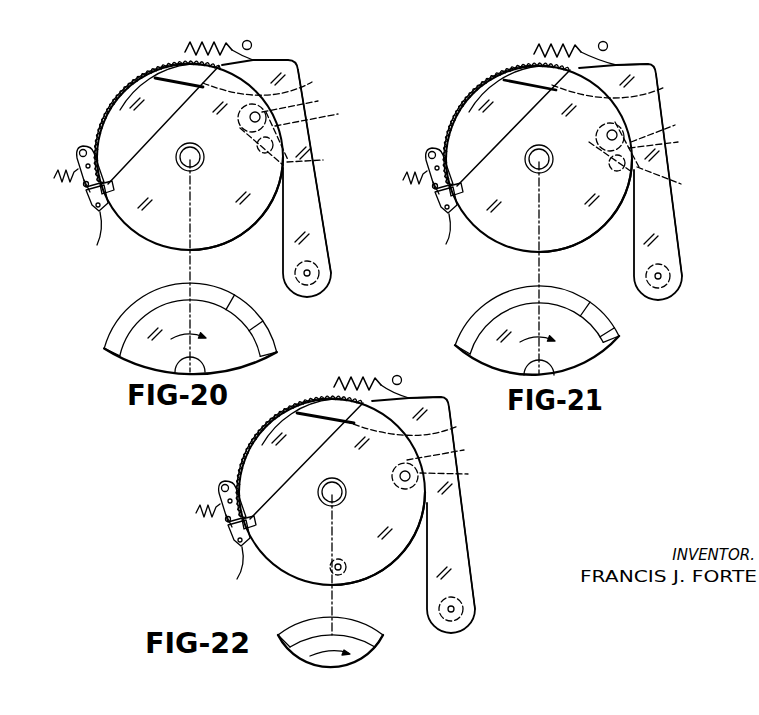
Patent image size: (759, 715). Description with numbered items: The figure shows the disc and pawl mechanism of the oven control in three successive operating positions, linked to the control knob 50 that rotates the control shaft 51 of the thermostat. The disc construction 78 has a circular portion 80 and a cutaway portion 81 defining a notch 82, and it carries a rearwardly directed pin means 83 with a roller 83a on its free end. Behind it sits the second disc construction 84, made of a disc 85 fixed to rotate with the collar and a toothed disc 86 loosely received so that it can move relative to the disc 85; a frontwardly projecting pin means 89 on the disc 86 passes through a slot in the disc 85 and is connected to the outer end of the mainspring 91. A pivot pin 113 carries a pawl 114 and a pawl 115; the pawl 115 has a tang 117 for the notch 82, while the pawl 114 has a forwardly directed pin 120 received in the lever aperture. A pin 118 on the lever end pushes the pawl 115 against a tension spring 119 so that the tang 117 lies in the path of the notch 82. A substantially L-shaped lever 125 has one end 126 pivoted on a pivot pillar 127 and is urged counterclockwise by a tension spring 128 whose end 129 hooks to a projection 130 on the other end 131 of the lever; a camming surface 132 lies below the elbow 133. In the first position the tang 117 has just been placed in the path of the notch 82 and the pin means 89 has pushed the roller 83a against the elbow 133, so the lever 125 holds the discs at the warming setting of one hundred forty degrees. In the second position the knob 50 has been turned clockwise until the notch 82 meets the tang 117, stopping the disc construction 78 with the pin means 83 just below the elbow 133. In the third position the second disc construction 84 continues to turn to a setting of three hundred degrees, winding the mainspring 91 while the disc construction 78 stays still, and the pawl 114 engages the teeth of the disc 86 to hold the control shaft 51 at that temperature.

In FIG. 20, the control knob 50 is at (272, 346).
In FIG. 21, the control knob 50 is at (556, 330).
In FIG. 22, the control knob 50 is at (325, 633).
In FIG. 20, the control shaft 51 is at (192, 272).
In FIG. 21, the control shaft 51 is at (563, 268).
In FIG. 22, the control shaft 51 is at (353, 565).
In FIG. 20, the disc construction 78 is at (232, 236).
In FIG. 21, the disc construction 78 is at (585, 210).
In FIG. 22, the disc construction 78 is at (378, 540).
In FIG. 20, the circular portion 80 is at (151, 238).
In FIG. 21, the circular portion 80 is at (539, 162).
In FIG. 22, the circular portion 80 is at (332, 492).
In FIG. 20, the cutaway portion 81 is at (198, 86).
In FIG. 21, the cutaway portion 81 is at (523, 66).
In FIG. 22, the cutaway portion 81 is at (326, 396).
In FIG. 20, the notch 82 is at (113, 189).
In FIG. 21, the notch 82 is at (469, 186).
In FIG. 22, the notch 82 is at (257, 521).
In FIG. 20, the pin means 83 is at (250, 117).
In FIG. 21, the pin means 83 is at (605, 125).
In FIG. 22, the pin means 83 is at (405, 490).
In FIG. 20, the roller 83a is at (302, 123).
In FIG. 21, the roller 83a is at (658, 142).
In FIG. 22, the roller 83a is at (452, 450).
In FIG. 20, the second disc construction 84 is at (120, 72).
In FIG. 21, the second disc construction 84 is at (485, 83).
In FIG. 22, the second disc construction 84 is at (265, 422).
In FIG. 20, the disc 85 is at (110, 125).
In FIG. 21, the disc 85 is at (492, 124).
In FIG. 22, the disc 85 is at (299, 453).
In FIG. 20, the disc 86 is at (113, 100).
In FIG. 21, the disc 86 is at (498, 123).
In FIG. 22, the disc 86 is at (299, 443).
In FIG. 20, the pin means 89 is at (317, 161).
In FIG. 21, the pin means 89 is at (670, 181).
In FIG. 22, the pin means 89 is at (357, 580).
In FIG. 20, the mainspring 91 is at (204, 157).
In FIG. 21, the mainspring 91 is at (559, 165).
In FIG. 22, the mainspring 91 is at (349, 519).
In FIG. 20, the pivot pin 113 is at (78, 147).
In FIG. 21, the pivot pin 113 is at (415, 164).
In FIG. 22, the pivot pin 113 is at (207, 492).
In FIG. 20, the pawl 114 is at (86, 191).
In FIG. 21, the pawl 114 is at (431, 213).
In FIG. 22, the pawl 114 is at (224, 545).
In FIG. 20, the pawl 115 is at (76, 158).
In FIG. 21, the pawl 115 is at (407, 165).
In FIG. 22, the pawl 115 is at (198, 495).
In FIG. 20, the tang 117 is at (106, 186).
In FIG. 21, the tang 117 is at (511, 129).
In FIG. 22, the tang 117 is at (304, 462).
In FIG. 20, the pin 118 is at (84, 185).
In FIG. 21, the pin 118 is at (413, 200).
In FIG. 22, the pin 118 is at (207, 533).
In FIG. 20, the tension spring 119 is at (54, 178).
In FIG. 21, the tension spring 119 is at (392, 187).
In FIG. 22, the tension spring 119 is at (185, 520).
In FIG. 20, the pin 120 is at (84, 236).
In FIG. 21, the pin 120 is at (435, 236).
In FIG. 22, the pin 120 is at (226, 570).
In FIG. 20, the L-shaped lever 125 is at (305, 135).
In FIG. 21, the L-shaped lever 125 is at (643, 182).
In FIG. 22, the L-shaped lever 125 is at (435, 515).
In FIG. 20, the end 126 is at (327, 247).
In FIG. 21, the end 126 is at (689, 175).
In FIG. 22, the end 126 is at (481, 508).
In FIG. 20, the pivot pillar 127 is at (311, 274).
In FIG. 21, the pivot pillar 127 is at (683, 283).
In FIG. 22, the pivot pillar 127 is at (475, 614).
In FIG. 20, the tension spring 128 is at (209, 44).
In FIG. 21, the tension spring 128 is at (564, 36).
In FIG. 22, the tension spring 128 is at (364, 365).
In FIG. 20, the end 129 is at (252, 52).
In FIG. 21, the end 129 is at (618, 51).
In FIG. 22, the end 129 is at (416, 384).
In FIG. 20, the projection 130 is at (251, 41).
In FIG. 21, the projection 130 is at (623, 33).
In FIG. 22, the projection 130 is at (415, 369).
In FIG. 20, the end 131 is at (292, 61).
In FIG. 21, the end 131 is at (652, 61).
In FIG. 22, the end 131 is at (444, 398).
In FIG. 20, the camming surface 132 is at (303, 135).
In FIG. 21, the camming surface 132 is at (648, 147).
In FIG. 22, the camming surface 132 is at (458, 473).
In FIG. 20, the elbow 133 is at (270, 82).
In FIG. 21, the elbow 133 is at (623, 88).
In FIG. 22, the elbow 133 is at (417, 428).